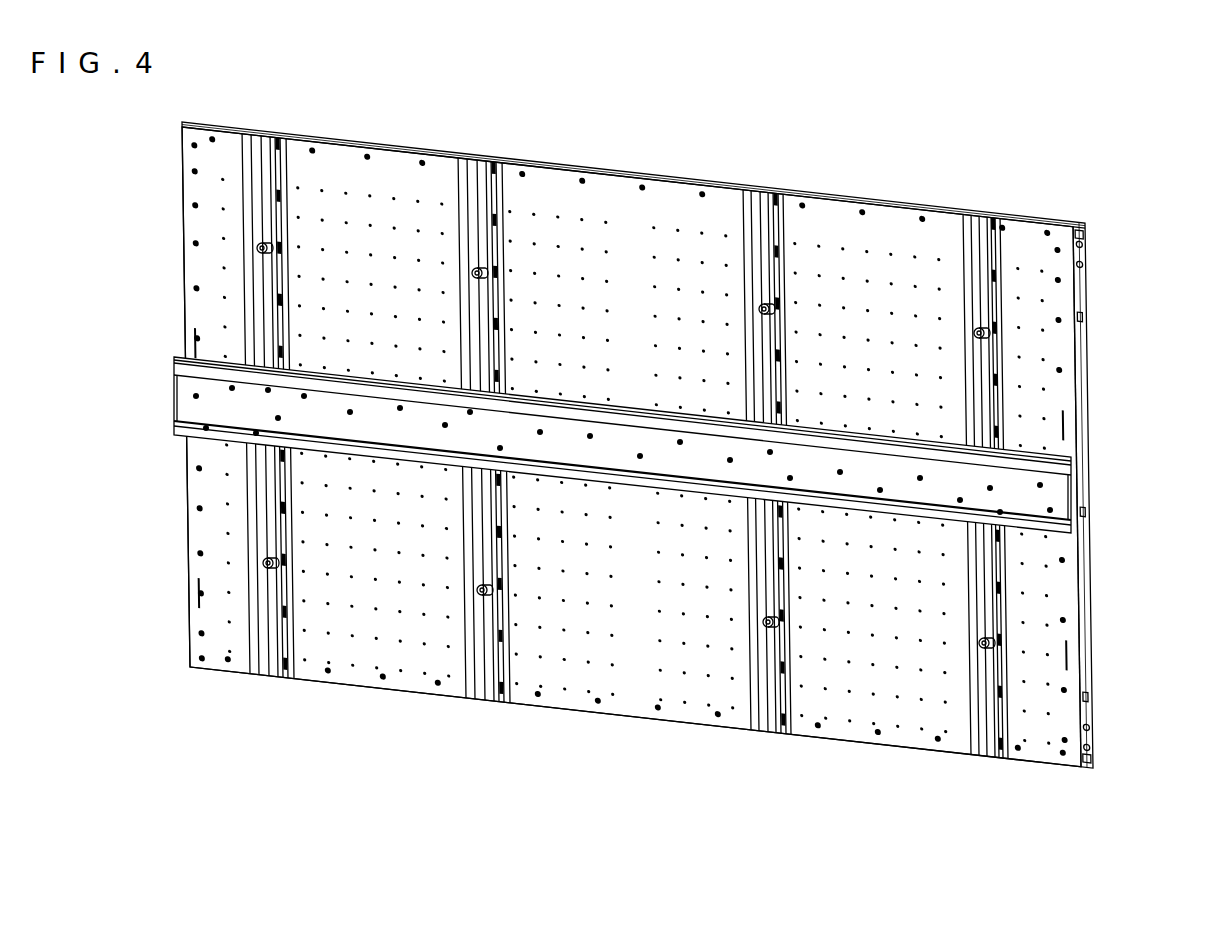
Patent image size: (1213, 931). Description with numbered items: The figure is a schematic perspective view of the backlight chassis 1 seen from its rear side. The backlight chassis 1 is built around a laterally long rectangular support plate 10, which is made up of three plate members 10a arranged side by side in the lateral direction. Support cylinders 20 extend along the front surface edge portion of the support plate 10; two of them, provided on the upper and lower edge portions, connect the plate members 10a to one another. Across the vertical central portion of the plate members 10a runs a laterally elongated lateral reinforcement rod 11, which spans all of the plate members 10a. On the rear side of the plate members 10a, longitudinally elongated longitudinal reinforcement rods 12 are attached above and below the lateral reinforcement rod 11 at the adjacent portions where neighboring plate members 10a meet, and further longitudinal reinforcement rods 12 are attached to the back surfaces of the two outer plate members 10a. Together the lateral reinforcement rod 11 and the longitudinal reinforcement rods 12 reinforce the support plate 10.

The backlight chassis 1 is at (636, 156).
The support plate 10 is at (667, 686).
The plate member 10a is at (880, 725).
The lateral reinforcement rod 11 is at (1058, 466).
The longitudinal reinforcement rod 12 is at (990, 765).
The support cylinder 20 is at (885, 205).